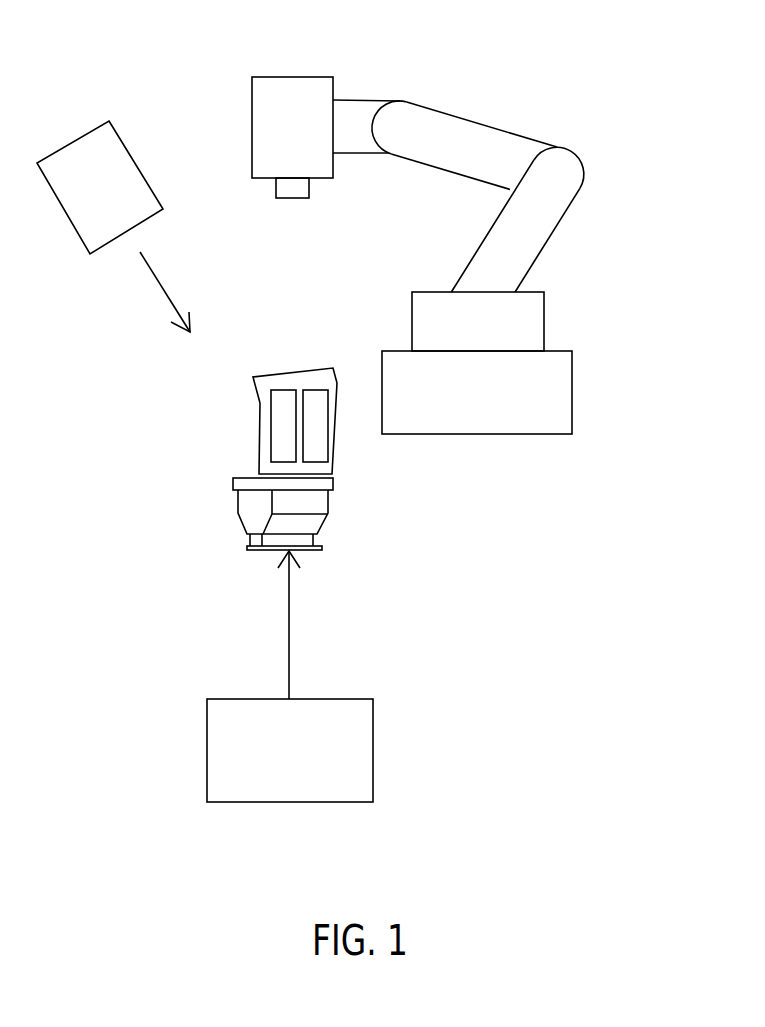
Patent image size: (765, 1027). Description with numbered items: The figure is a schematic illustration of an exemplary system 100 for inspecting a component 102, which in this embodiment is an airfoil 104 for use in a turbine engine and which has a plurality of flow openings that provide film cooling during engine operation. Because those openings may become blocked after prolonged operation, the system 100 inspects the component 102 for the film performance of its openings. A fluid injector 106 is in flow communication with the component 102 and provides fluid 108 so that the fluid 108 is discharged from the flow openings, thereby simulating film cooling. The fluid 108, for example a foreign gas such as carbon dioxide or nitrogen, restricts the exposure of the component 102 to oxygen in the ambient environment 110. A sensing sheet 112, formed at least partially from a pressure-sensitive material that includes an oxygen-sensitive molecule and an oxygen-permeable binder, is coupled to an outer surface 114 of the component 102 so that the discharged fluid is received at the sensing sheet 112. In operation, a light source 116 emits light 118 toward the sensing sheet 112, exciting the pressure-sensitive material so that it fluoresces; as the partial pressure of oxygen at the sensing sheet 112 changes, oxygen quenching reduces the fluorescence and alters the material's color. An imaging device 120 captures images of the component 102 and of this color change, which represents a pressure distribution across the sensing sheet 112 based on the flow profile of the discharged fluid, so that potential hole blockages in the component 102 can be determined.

The system 100 is at (623, 55).
The component 102 is at (383, 510).
The airfoil 104 is at (337, 438).
The fluid injector 106 is at (309, 766).
The fluid 108 is at (290, 642).
The ambient environment 110 is at (118, 452).
The sensing sheet 112 is at (288, 390).
The outer surface 114 is at (270, 382).
The light source 116 is at (118, 200).
The light 118 is at (158, 283).
The imaging device 120 is at (299, 77).